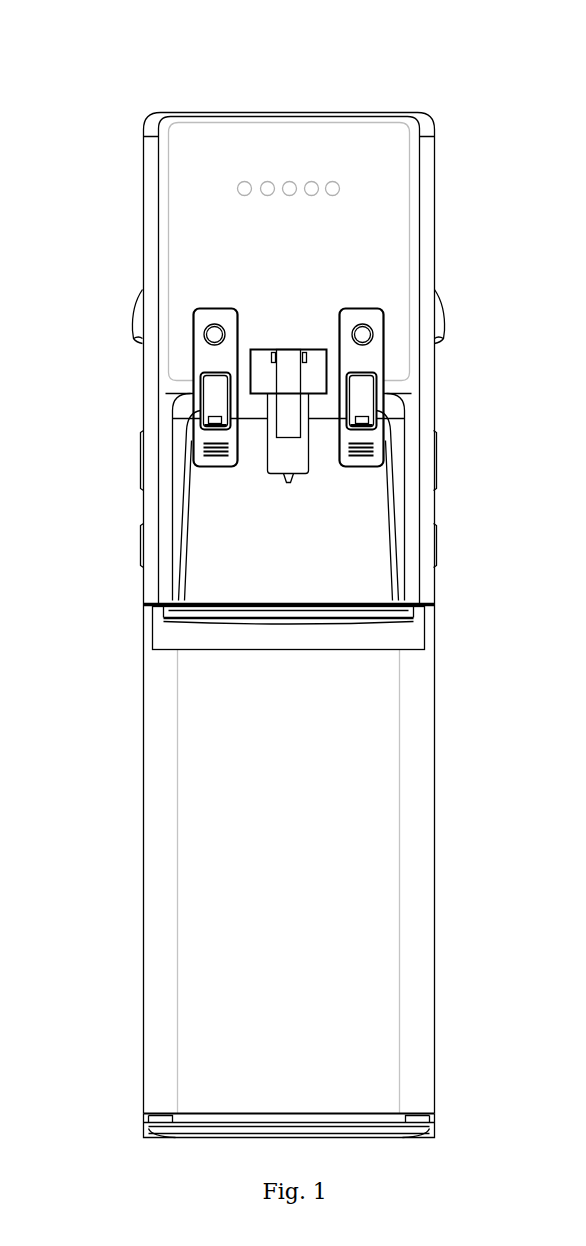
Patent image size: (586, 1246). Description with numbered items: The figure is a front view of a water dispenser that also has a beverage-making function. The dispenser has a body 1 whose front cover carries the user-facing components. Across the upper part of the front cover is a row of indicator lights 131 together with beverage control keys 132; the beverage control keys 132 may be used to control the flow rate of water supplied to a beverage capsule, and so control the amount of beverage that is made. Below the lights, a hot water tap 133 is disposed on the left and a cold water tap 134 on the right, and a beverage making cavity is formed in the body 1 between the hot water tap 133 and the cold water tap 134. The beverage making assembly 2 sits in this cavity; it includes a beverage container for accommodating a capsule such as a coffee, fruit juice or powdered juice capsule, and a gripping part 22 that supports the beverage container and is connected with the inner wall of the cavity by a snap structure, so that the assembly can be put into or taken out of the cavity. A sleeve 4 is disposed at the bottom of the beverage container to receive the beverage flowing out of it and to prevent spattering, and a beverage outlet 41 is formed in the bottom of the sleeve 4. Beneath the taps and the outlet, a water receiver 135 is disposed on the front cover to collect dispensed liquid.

The body 1 is at (143, 165).
The indicator lights 131 is at (244, 181).
The beverage control keys 132 is at (267, 181).
The hot water tap 133 is at (212, 353).
The cold water tap 134 is at (377, 342).
The water receiver 135 is at (412, 635).
The beverage making assembly 2 is at (267, 425).
The gripping part 22 is at (295, 379).
The sleeve 4 is at (295, 464).
The beverage outlet 41 is at (288, 484).